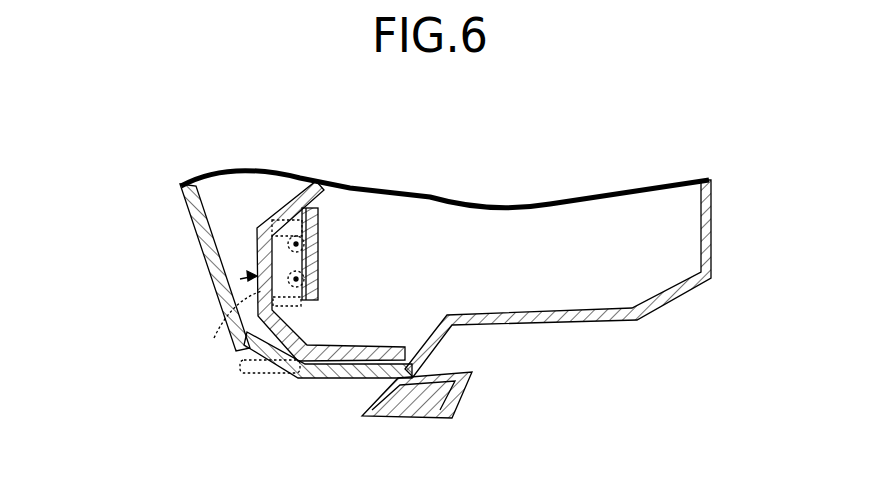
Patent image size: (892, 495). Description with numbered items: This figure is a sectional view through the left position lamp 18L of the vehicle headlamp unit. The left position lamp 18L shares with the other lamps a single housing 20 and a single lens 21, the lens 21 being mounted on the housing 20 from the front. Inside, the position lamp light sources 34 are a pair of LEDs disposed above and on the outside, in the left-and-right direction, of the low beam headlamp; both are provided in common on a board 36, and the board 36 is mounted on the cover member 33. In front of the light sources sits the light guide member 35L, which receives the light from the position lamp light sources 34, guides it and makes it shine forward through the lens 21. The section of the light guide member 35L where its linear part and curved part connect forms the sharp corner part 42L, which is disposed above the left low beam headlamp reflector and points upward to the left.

The housing 20 is at (546, 314).
The lens 21 is at (188, 233).
The light guide member 35L is at (257, 231).
The board 36 is at (321, 229).
The position lamp light sources 34 is at (317, 277).
The left position lamp 18L is at (248, 278).
The sharp corner part 42L is at (226, 332).
The cover member 33 is at (338, 370).